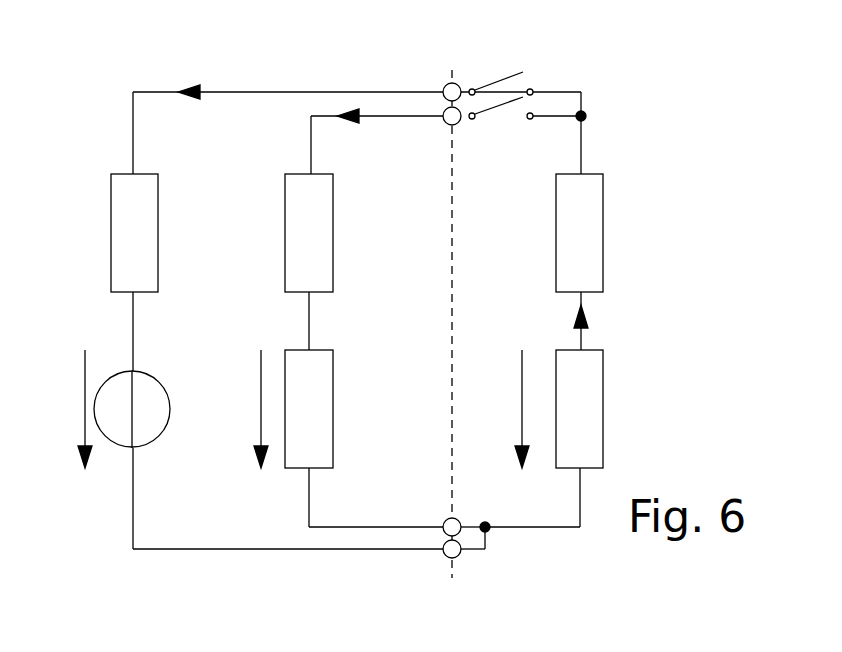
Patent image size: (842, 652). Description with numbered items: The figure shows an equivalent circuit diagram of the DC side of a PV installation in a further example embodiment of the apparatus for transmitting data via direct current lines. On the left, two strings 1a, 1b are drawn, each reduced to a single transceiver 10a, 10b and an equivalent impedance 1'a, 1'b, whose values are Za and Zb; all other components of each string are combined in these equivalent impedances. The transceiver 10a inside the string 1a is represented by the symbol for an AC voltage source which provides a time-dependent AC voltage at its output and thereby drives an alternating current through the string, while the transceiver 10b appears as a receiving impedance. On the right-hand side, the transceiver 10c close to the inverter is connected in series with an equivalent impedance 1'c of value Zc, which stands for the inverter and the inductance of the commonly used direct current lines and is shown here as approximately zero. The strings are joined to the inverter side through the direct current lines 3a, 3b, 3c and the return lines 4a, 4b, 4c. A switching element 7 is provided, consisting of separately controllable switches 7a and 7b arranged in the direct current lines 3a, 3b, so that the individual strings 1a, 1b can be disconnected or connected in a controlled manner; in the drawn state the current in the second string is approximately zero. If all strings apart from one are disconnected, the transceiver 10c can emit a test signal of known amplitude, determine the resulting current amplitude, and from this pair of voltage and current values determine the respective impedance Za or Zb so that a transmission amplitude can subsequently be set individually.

The string 1a is at (86, 540).
The string 1b is at (359, 500).
The equivalent impedance 1'a is at (111, 218).
The equivalent impedance 1'b is at (350, 233).
The equivalent impedance 1'c is at (626, 218).
The direct current line 3a is at (248, 88).
The direct current line 3b is at (388, 112).
The direct current line 3c is at (581, 136).
The direct current line 4a is at (235, 551).
The direct current line 4b is at (305, 495).
The direct current line 4c is at (558, 530).
The switching element 7 is at (504, 284).
The switch 7a is at (497, 82).
The switch 7b is at (500, 108).
The transceiver 10a is at (112, 375).
The transceiver 10b is at (333, 374).
The transceiver 10c is at (603, 388).